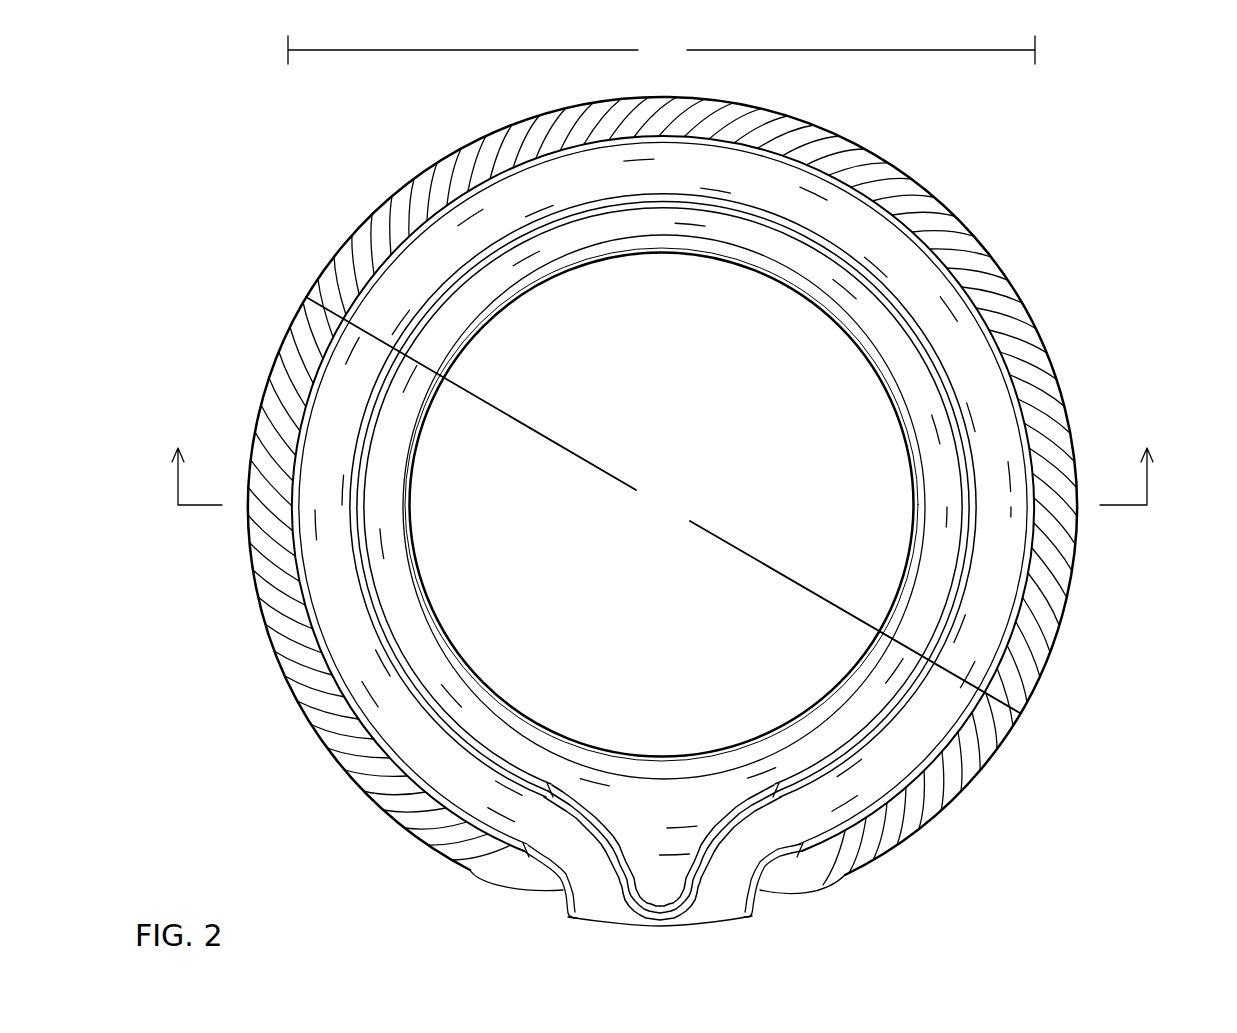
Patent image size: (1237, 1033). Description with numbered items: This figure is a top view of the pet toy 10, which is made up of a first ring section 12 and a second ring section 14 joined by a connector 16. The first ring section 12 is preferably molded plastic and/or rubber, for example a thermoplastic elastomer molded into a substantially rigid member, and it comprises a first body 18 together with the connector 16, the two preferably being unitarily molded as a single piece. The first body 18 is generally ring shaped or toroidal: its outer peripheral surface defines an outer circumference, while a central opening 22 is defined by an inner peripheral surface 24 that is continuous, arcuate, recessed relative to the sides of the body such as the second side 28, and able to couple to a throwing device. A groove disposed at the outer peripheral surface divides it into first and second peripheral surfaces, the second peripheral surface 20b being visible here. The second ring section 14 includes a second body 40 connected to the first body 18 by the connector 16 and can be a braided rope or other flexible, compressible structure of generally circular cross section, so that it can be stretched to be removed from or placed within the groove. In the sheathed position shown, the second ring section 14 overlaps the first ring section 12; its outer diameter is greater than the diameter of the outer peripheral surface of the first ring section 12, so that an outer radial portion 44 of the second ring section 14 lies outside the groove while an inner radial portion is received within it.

The pet toy 10 is at (1138, 855).
The first ring section 12 is at (830, 808).
The second ring section 14 is at (1022, 715).
The connector 16 is at (573, 918).
The first body 18 is at (350, 366).
The second peripheral surface 20b is at (960, 280).
The opening 22 is at (752, 275).
The inner peripheral surface 24 is at (905, 437).
The second side 28 is at (827, 190).
The second body 40 is at (342, 248).
The outer radial portion 44 is at (1055, 590).